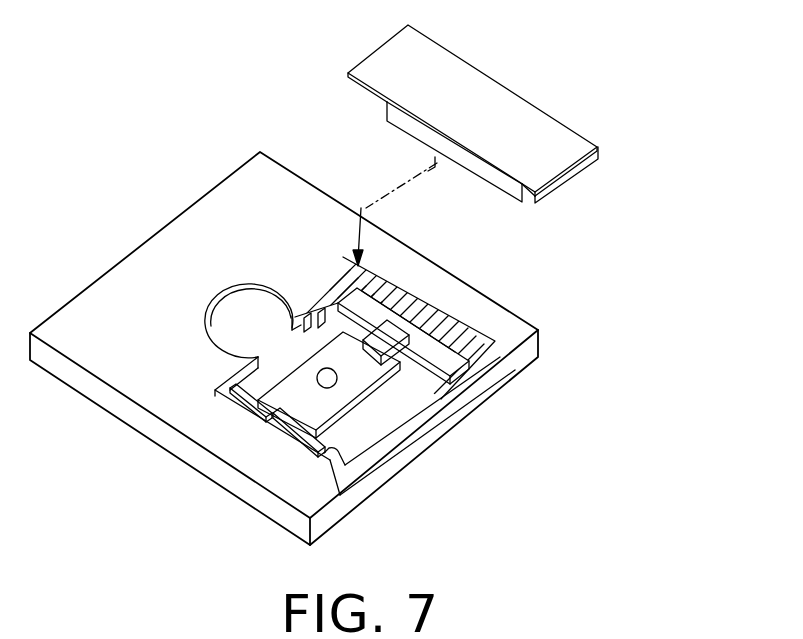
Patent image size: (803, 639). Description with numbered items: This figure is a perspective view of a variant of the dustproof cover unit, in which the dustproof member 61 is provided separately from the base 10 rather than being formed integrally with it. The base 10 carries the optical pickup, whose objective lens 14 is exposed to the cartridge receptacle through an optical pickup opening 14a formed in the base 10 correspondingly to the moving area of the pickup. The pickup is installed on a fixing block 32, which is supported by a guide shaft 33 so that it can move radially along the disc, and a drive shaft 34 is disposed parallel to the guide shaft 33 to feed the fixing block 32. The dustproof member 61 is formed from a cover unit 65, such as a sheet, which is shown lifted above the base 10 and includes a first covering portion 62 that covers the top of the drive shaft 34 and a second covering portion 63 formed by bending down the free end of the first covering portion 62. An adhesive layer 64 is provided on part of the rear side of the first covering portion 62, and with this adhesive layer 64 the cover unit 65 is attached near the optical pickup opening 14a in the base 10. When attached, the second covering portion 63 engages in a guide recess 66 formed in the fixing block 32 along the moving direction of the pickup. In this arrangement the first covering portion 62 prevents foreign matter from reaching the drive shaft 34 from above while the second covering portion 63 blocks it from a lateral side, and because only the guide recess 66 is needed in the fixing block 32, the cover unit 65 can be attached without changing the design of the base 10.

The base 10 is at (512, 366).
The objective lens 14 is at (317, 376).
The optical pickup opening 14a is at (328, 450).
The fixing block 32 is at (345, 418).
The guide shaft 33 is at (300, 440).
The drive shaft 34 is at (462, 342).
The dustproof member 61 is at (303, 90).
The first covering portion 62 is at (440, 72).
The second covering portion 63 is at (488, 182).
The adhesive layer 64 is at (583, 170).
The cover unit 65 is at (525, 123).
The guide recess 66 is at (392, 353).